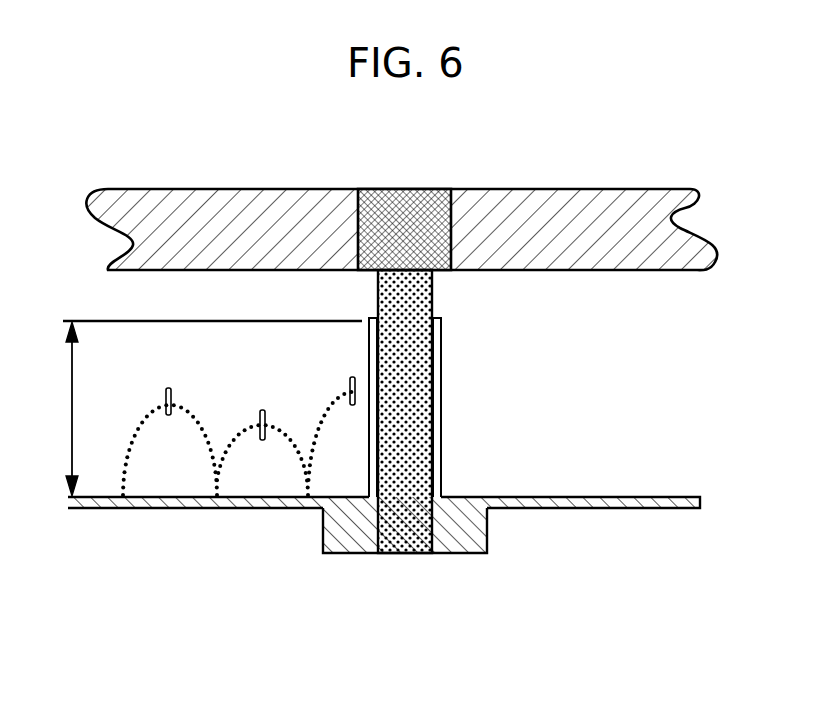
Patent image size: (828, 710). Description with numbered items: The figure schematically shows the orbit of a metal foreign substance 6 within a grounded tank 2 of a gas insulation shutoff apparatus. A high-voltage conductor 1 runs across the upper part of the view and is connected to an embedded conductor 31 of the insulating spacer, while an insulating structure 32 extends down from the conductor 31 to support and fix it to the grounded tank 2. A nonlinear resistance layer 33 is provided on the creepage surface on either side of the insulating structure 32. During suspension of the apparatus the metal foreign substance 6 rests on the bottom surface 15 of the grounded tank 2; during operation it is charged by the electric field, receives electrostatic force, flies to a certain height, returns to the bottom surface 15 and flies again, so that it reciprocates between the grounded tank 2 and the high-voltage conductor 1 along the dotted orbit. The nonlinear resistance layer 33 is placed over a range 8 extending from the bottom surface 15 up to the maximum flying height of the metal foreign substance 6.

The high-voltage conductor 1 is at (192, 200).
The conductor 31 is at (397, 200).
The insulating structure 32 is at (413, 303).
The nonlinear resistance layer 33 is at (370, 348).
The bottom surface 15 is at (102, 496).
The grounded tank 2 is at (349, 548).
The range 8 is at (72, 390).
The metal foreign substance 6 is at (260, 415).